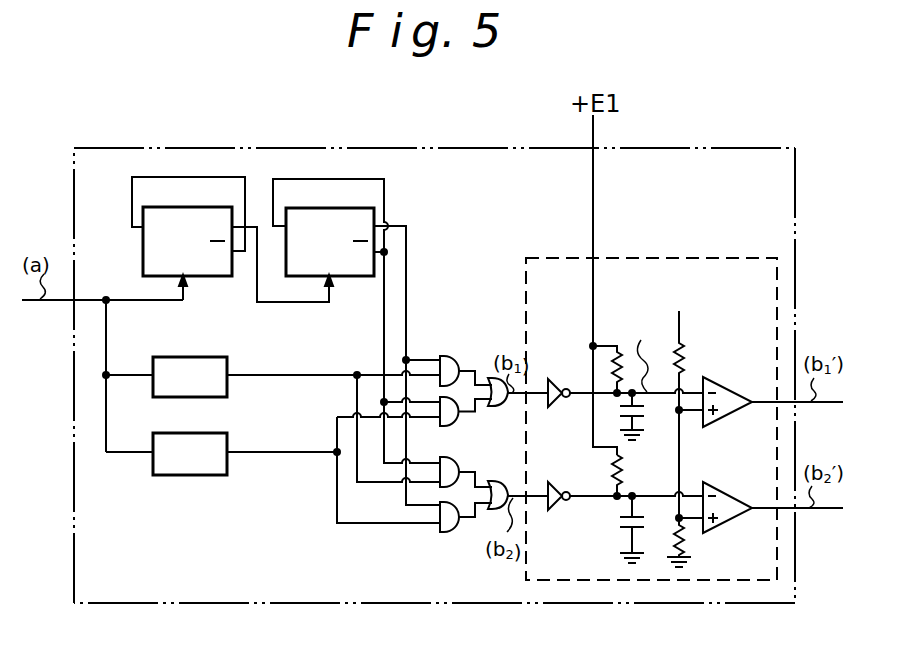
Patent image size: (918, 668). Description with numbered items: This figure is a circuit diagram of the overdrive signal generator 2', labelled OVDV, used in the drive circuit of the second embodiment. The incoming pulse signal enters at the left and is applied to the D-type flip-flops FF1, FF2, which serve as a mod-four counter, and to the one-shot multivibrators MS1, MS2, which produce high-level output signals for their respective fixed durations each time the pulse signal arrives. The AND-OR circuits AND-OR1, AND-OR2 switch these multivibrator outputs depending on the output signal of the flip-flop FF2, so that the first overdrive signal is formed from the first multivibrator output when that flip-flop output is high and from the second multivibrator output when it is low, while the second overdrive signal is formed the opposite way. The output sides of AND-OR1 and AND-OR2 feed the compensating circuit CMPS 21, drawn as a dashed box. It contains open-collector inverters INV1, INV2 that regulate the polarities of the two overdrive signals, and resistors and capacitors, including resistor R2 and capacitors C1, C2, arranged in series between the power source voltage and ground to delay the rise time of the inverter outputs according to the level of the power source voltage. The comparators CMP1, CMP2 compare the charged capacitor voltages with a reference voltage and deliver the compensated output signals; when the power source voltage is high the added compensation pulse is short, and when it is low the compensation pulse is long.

The overdrive signal generator 2' is at (445, 345).
The compensating circuit 21 is at (620, 258).
The D-type flip-flop FF1 is at (188, 238).
The D-type flip-flop FF2 is at (330, 227).
The one-shot multivibrator MS1 is at (190, 377).
The one-shot multivibrator MS2 is at (190, 454).
The AND-OR circuit AND-OR1 is at (464, 377).
The AND-OR circuit AND-OR2 is at (464, 482).
The inverter INV1 is at (549, 355).
The inverter INV2 is at (551, 477).
The comparator CMP1 is at (728, 390).
The comparator CMP2 is at (728, 496).
The capacitor C1 is at (646, 411).
The capacitor C2 is at (646, 522).
The resistor R2 is at (624, 466).
The overdrive signal generator OVDV is at (444, 171).
The compensating circuit CMPS is at (648, 281).